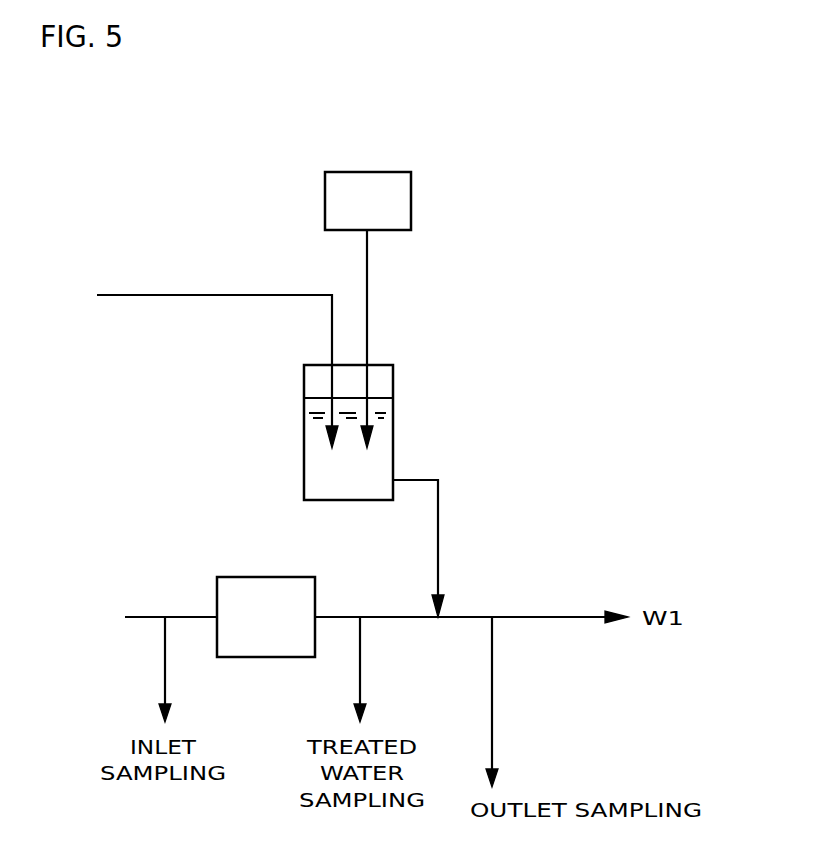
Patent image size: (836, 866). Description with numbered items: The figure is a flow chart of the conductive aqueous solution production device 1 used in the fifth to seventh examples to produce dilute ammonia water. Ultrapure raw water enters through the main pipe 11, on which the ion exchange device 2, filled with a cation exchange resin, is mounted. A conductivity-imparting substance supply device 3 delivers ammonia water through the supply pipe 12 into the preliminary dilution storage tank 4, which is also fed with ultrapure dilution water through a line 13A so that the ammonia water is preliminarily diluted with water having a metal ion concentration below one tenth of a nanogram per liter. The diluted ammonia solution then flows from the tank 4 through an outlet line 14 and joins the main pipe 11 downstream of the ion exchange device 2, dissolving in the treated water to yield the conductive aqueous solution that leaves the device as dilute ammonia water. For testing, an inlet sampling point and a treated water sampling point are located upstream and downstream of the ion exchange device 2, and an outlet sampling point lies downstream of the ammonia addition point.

The conductive aqueous solution production device 1 is at (568, 323).
The ion exchange device 2 is at (263, 653).
The conductivity-imparting substance supply device 3 is at (368, 172).
The preliminary dilution storage tank 4 is at (393, 425).
The main pipe 11 is at (143, 614).
The supply pipe 12 is at (368, 307).
The dilution water line 13A is at (282, 296).
The treated water supply line 14 is at (440, 535).